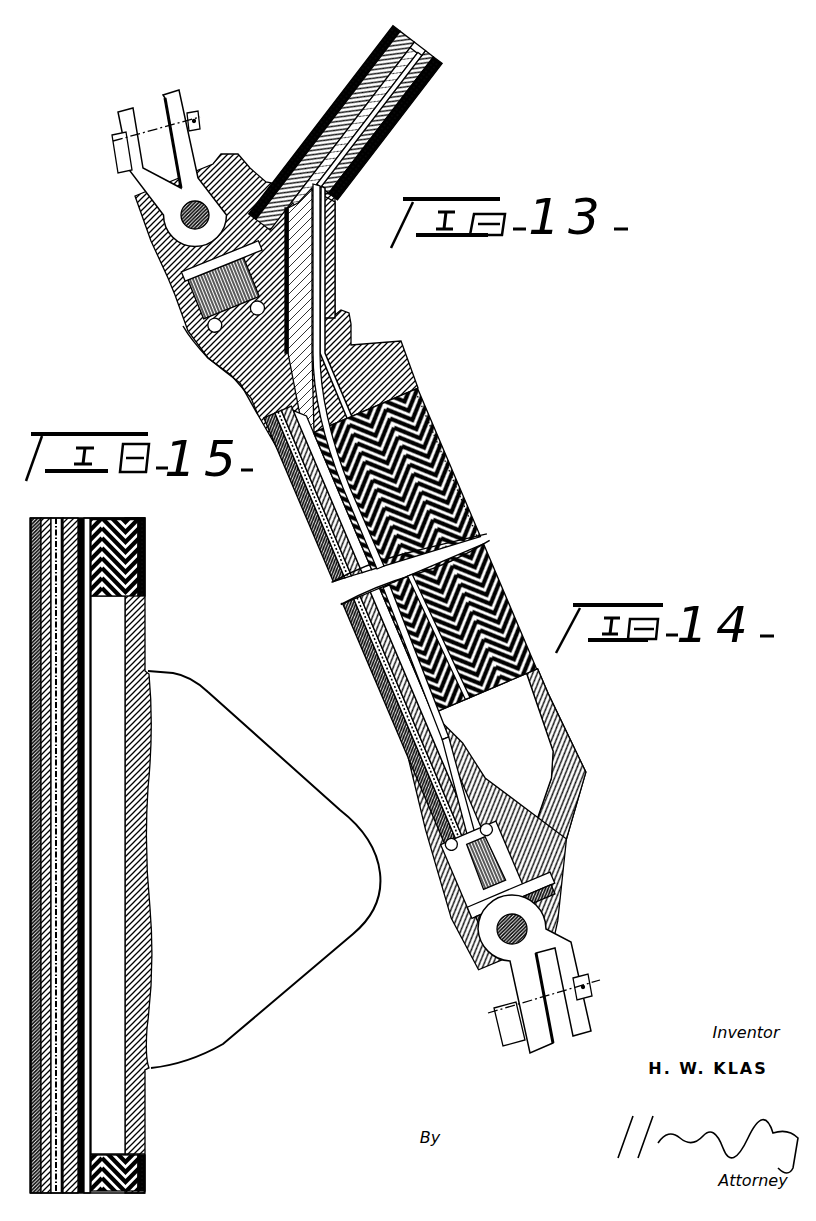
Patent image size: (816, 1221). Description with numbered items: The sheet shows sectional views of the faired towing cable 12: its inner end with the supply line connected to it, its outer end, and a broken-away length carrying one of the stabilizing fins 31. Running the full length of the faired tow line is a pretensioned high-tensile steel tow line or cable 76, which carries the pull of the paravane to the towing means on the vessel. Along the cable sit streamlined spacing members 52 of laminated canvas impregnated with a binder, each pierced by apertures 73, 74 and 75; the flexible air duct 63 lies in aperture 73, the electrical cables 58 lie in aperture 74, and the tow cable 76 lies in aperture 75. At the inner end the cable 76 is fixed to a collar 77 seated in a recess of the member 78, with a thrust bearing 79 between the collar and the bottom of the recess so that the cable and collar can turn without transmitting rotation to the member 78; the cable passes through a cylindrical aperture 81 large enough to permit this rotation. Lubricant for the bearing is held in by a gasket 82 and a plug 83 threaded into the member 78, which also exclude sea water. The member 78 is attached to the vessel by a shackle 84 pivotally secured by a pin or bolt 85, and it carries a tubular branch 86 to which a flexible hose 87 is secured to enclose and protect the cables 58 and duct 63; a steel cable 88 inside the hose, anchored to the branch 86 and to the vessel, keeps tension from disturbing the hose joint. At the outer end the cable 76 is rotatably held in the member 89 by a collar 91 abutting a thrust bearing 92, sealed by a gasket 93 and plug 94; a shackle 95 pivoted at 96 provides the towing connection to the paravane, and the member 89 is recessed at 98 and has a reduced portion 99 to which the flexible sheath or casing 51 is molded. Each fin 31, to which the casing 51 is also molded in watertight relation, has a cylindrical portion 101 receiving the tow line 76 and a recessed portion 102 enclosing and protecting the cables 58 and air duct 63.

In FIG. 13, the faired towing cable 12 is at (481, 534).
In FIG. 14, the faired towing cable 12 is at (341, 604).
In FIG. 15, the faired towing cable 12 is at (142, 1147).
In FIG. 15, the stabilizing fin 31 is at (264, 869).
In FIG. 13, the flexible sheath or casing 51 is at (296, 512).
In FIG. 14, the flexible sheath or casing 51 is at (384, 705).
In FIG. 15, the flexible sheath or casing 51 is at (138, 611).
In FIG. 13, the spacing member 52 is at (416, 404).
In FIG. 14, the spacing member 52 is at (487, 556).
In FIG. 15, the spacing member 52 is at (136, 534).
In FIG. 13, the cable 58 is at (404, 42).
In FIG. 14, the cable 58 is at (439, 636).
In FIG. 15, the cable 58 is at (77, 510).
In FIG. 13, the flexible tube or duct 63 is at (433, 50).
In FIG. 15, the flexible tube or duct 63 is at (96, 512).
In FIG. 13, the aperture 73 is at (408, 550).
In FIG. 14, the aperture 73 is at (442, 730).
In FIG. 15, the aperture 73 is at (93, 590).
In FIG. 13, the aperture 74 is at (310, 526).
In FIG. 14, the aperture 74 is at (352, 633).
In FIG. 15, the aperture 74 is at (62, 512).
In FIG. 13, the aperture 75 is at (287, 494).
In FIG. 14, the aperture 75 is at (370, 657).
In FIG. 15, the aperture 75 is at (27, 510).
In FIG. 13, the tow line or cable 76 is at (228, 378).
In FIG. 14, the tow line or cable 76 is at (336, 597).
In FIG. 15, the tow line or cable 76 is at (38, 510).
In FIG. 13, the collar 77 is at (200, 313).
In FIG. 13, the member 78 is at (186, 332).
In FIG. 13, the thrust bearing 79 is at (205, 354).
In FIG. 13, the cylindrical aperture 81 is at (262, 400).
In FIG. 13, the gasket 82 is at (178, 285).
In FIG. 13, the plug 83 is at (170, 262).
In FIG. 13, the shackle 84 is at (190, 138).
In FIG. 13, the pin or bolt 85 is at (150, 229).
In FIG. 13, the tubular branch or portion 86 is at (270, 160).
In FIG. 13, the flexible hose or tube 87 is at (427, 64).
In FIG. 13, the steel cable 88 is at (372, 44).
In FIG. 14, the member 89 is at (556, 842).
In FIG. 14, the collar 91 is at (440, 870).
In FIG. 14, the thrust bearing 92 is at (436, 838).
In FIG. 14, the gasket 93 is at (505, 870).
In FIG. 14, the plug 94 is at (520, 882).
In FIG. 14, the shackle 95 is at (560, 966).
In FIG. 14, the pivot 96 is at (488, 940).
In FIG. 14, the recess 98 is at (506, 756).
In FIG. 14, the reduced portion 99 is at (560, 702).
In FIG. 15, the cylindrical portion 101 is at (50, 812).
In FIG. 15, the recessed portion 102 is at (103, 855).